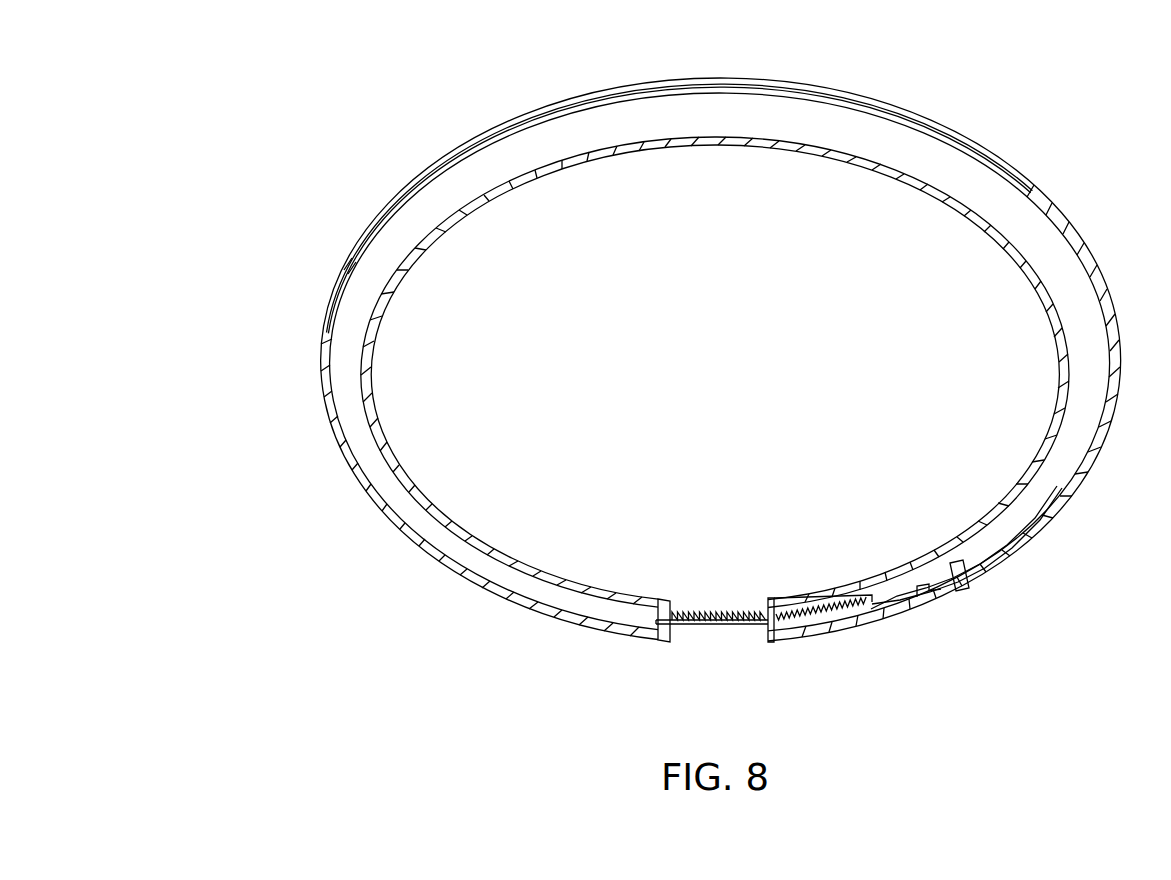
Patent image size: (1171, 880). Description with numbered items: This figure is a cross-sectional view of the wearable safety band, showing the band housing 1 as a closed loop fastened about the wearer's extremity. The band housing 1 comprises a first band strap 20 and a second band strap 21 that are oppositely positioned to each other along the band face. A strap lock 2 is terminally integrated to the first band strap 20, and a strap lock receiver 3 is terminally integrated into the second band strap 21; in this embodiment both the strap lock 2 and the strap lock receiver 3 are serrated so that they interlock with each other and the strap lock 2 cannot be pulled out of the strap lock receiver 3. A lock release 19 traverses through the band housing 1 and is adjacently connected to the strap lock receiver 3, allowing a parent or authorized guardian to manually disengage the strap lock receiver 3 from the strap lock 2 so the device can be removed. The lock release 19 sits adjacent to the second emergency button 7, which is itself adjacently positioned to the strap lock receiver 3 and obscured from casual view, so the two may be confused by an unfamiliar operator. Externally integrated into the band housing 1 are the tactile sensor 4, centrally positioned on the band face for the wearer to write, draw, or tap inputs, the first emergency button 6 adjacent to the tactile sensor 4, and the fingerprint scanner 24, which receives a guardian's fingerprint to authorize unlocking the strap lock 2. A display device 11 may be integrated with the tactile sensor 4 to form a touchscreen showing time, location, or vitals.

The band housing 1 is at (278, 66).
The strap lock 2 is at (713, 621).
The strap lock receiver 3 is at (765, 603).
The tactile sensor 4 is at (953, 133).
The first emergency button 6 is at (1040, 186).
The second emergency button 7 is at (1003, 563).
The display device 11 is at (862, 100).
The lock release 19 is at (973, 583).
The first band strap 20 is at (423, 547).
The second band strap 21 is at (1033, 537).
The fingerprint scanner 24 is at (345, 265).